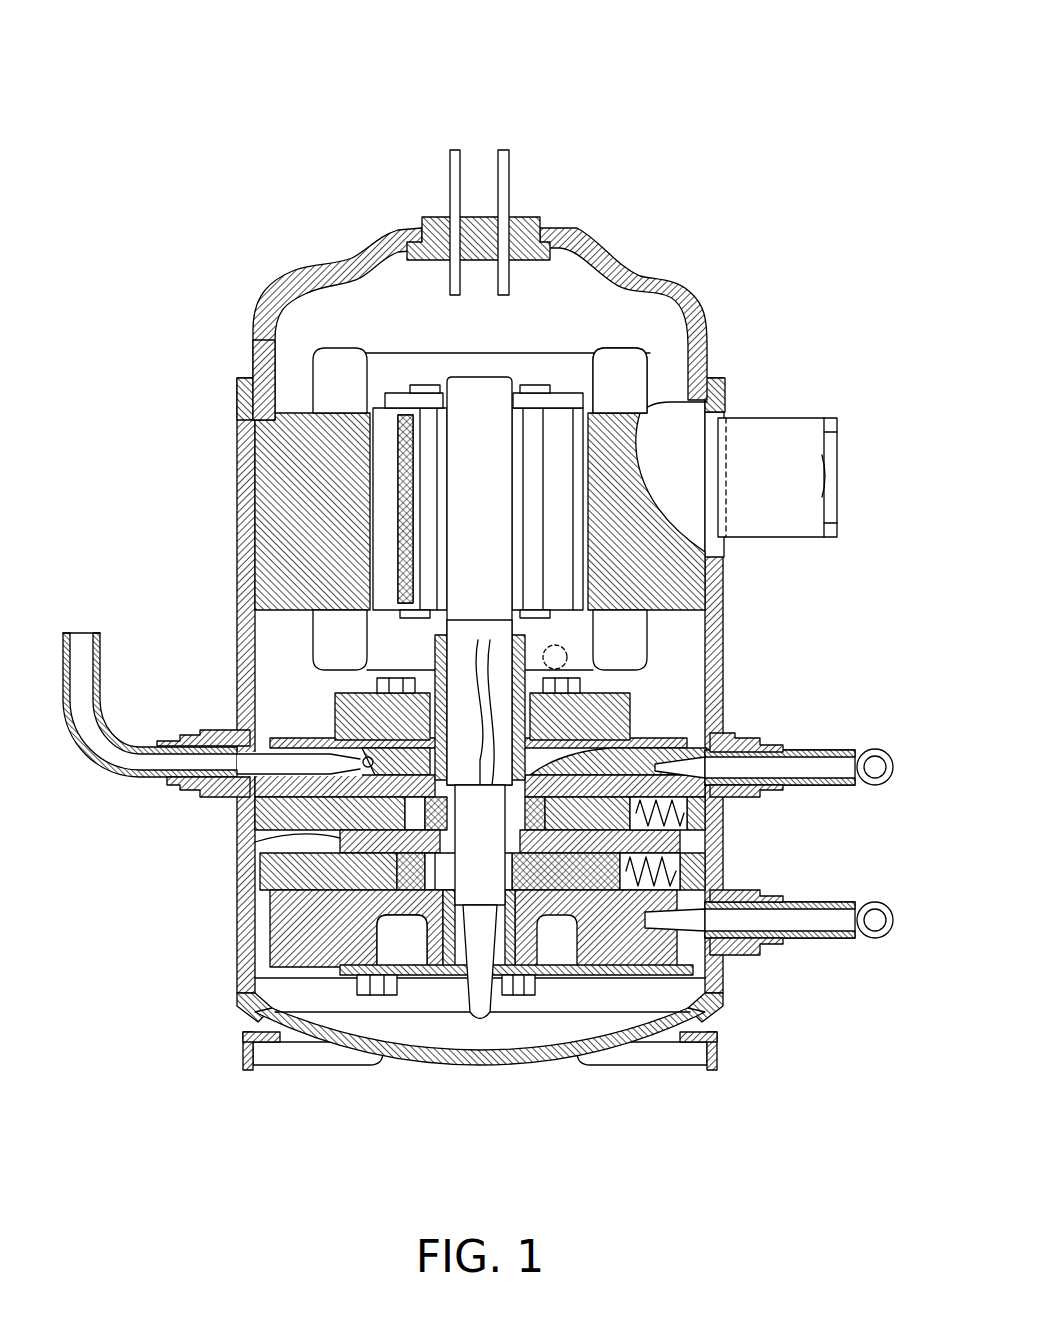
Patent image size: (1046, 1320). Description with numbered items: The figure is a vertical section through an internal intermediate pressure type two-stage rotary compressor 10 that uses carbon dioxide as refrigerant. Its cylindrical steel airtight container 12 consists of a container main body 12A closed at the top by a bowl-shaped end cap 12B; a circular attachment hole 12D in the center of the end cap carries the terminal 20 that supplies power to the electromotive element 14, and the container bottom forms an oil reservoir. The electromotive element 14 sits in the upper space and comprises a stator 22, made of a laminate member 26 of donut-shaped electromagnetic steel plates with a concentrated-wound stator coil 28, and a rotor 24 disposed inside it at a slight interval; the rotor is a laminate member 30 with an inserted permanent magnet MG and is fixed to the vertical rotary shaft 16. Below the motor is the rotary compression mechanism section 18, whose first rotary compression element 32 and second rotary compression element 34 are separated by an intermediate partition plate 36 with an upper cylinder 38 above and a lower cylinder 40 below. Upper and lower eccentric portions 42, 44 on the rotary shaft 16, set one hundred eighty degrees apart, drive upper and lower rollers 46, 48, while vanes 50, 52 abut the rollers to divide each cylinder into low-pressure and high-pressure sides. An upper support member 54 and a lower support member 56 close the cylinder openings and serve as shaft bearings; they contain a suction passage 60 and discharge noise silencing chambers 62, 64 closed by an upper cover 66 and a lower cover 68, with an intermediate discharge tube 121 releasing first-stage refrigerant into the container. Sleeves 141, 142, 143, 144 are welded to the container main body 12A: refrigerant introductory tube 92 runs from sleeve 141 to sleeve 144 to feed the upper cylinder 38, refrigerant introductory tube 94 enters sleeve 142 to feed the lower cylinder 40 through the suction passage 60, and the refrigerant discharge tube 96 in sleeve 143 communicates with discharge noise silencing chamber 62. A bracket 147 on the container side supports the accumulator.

The rotary compressor 10 is at (626, 130).
The airtight container 12 is at (744, 340).
The container main body 12A is at (728, 393).
The end cap 12B is at (700, 292).
The attachment hole 12D is at (422, 230).
The electromotive element 14 is at (606, 325).
The rotary shaft 16 is at (497, 380).
The rotary compression mechanism section 18 is at (158, 855).
The terminal 20 is at (536, 215).
The stator 22 is at (283, 448).
The rotor 24 is at (300, 408).
The laminate member 26 is at (260, 352).
The stator coil 28 is at (637, 350).
The laminate member 30 is at (555, 405).
The first rotary compression element 32 is at (232, 895).
The second rotary compression element 34 is at (213, 808).
The intermediate partition plate 36 is at (233, 852).
The upper cylinder 38 is at (235, 828).
The lower cylinder 40 is at (258, 905).
The upper eccentric portion 42 is at (495, 685).
The lower eccentric portion 44 is at (470, 905).
The upper roller 46 is at (490, 800).
The lower roller 48 is at (505, 830).
The vane 50 is at (725, 822).
The vane 52 is at (725, 868).
The upper support member 54 is at (632, 742).
The lower support member 56 is at (300, 975).
The suction passage 60 is at (640, 910).
The discharge noise silencing chamber 62 is at (330, 745).
The discharge noise silencing chamber 64 is at (395, 925).
The upper cover 66 is at (337, 700).
The lower cover 68 is at (335, 975).
The refrigerant introductory tube 92 is at (850, 735).
The refrigerant introductory tube 94 is at (848, 904).
The refrigerant discharge tube 96 is at (113, 690).
The intermediate discharge tube 121 is at (715, 638).
The sleeve 141 is at (760, 733).
The sleeve 142 is at (740, 950).
The sleeve 143 is at (180, 730).
The sleeve 144 is at (556, 640).
The bracket 147 is at (790, 538).
The permanent magnet MG is at (378, 412).